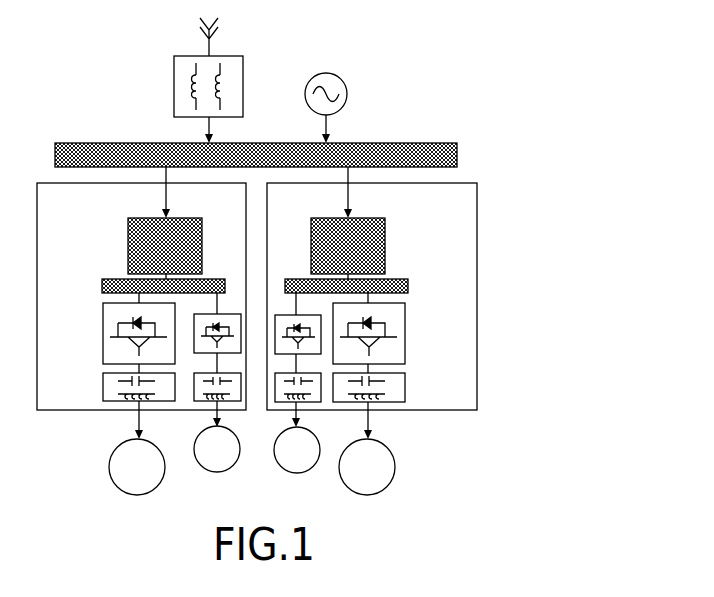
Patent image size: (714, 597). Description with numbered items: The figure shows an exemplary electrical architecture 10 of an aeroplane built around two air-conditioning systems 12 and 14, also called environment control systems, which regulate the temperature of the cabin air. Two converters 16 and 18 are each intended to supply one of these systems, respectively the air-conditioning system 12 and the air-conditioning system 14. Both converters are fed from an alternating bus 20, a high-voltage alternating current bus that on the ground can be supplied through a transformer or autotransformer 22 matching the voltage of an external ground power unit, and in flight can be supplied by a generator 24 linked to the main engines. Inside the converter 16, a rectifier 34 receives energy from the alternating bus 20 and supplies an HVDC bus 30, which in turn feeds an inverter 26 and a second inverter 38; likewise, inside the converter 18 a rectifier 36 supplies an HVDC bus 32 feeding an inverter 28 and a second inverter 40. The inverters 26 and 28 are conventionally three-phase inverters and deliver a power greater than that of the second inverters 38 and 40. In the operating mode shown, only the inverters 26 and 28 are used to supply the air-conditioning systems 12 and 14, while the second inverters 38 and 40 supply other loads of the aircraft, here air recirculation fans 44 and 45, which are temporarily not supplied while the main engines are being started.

The electrical architecture 10 is at (547, 309).
The air-conditioning system 12 is at (108, 467).
The air-conditioning system 14 is at (395, 468).
The converter 16 is at (73, 219).
The converter 18 is at (303, 219).
The alternating bus 20 is at (458, 152).
The transformer or autotransformer 22 is at (243, 70).
The generator 24 is at (347, 85).
The inverter 26 is at (103, 353).
The inverter 28 is at (405, 348).
The HVDC bus 30 is at (102, 286).
The HVDC bus 32 is at (408, 286).
The rectifier 34 is at (128, 238).
The rectifier 36 is at (385, 232).
The second inverter 38 is at (235, 314).
The second inverter 40 is at (285, 315).
The air recirculation fan 44 is at (204, 461).
The air recirculation fan 45 is at (284, 462).